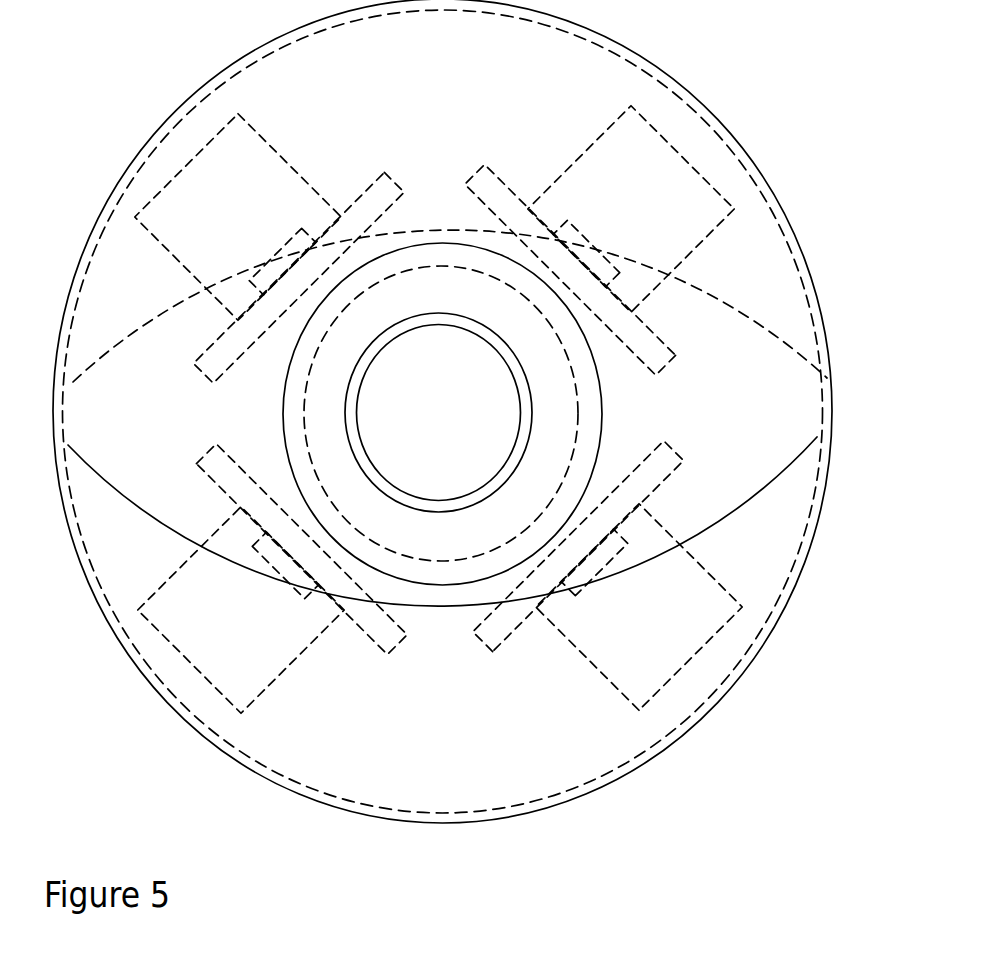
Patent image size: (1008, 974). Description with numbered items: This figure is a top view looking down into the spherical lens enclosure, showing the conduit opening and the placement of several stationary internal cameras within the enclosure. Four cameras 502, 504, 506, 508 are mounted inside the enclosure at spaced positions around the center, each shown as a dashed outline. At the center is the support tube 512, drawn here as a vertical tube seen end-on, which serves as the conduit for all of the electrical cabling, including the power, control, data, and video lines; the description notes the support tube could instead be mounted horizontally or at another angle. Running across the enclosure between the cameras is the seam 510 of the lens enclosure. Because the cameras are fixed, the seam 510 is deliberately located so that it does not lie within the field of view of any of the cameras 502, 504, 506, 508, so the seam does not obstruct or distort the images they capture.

The camera 502 is at (657, 188).
The camera 504 is at (673, 633).
The camera 506 is at (229, 627).
The camera 508 is at (230, 212).
The seam 510 is at (732, 312).
The support tube 512 is at (428, 423).